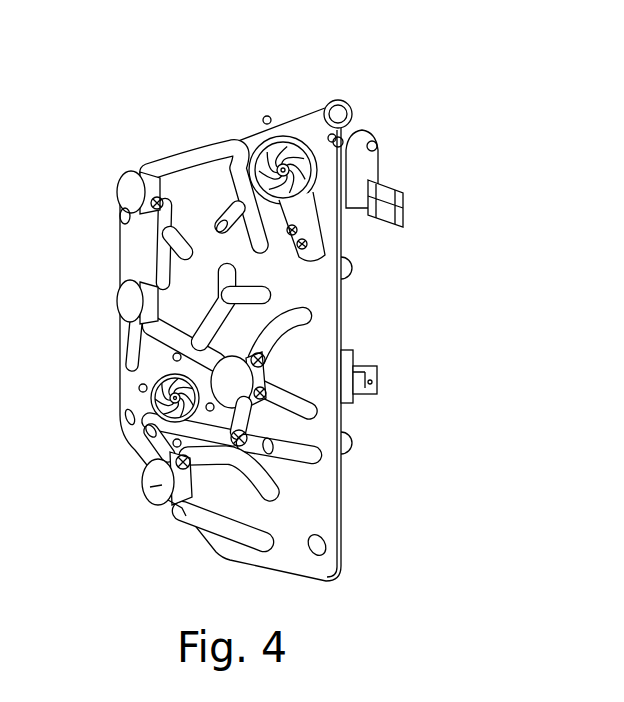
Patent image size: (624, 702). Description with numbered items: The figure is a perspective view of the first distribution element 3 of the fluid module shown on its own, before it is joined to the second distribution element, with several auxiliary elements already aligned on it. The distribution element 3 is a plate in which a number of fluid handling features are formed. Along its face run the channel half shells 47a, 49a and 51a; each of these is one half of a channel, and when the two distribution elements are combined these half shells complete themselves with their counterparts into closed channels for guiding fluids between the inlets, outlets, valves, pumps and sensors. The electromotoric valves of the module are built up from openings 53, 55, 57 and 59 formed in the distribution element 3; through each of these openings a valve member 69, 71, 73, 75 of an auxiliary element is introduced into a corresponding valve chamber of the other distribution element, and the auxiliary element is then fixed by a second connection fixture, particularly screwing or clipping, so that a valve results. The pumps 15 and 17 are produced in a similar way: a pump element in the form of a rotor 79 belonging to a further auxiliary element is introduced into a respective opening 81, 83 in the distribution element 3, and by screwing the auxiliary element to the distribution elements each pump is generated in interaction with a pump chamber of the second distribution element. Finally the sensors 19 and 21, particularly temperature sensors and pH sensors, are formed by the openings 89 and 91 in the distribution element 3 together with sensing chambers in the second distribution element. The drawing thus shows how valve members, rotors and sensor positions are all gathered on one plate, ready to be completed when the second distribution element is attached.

The first distribution element 3 is at (243, 128).
The pump 15 is at (358, 148).
The pump 17 is at (152, 420).
The sensor 19 is at (262, 445).
The sensor 21 is at (345, 238).
The channel half shell 47a is at (203, 150).
The channel half shell 49a is at (120, 373).
The channel half shell 51a is at (213, 440).
The opening 53 is at (177, 508).
The opening 55 is at (266, 386).
The opening 57 is at (118, 272).
The opening 59 is at (137, 168).
The valve member 69 is at (142, 494).
The valve member 71 is at (265, 353).
The valve member 73 is at (118, 296).
The valve member 75 is at (118, 184).
The rotor 79 is at (284, 128).
The opening 81 is at (332, 102).
The opening 83 is at (148, 397).
The opening 89 is at (307, 246).
The opening 91 is at (320, 460).